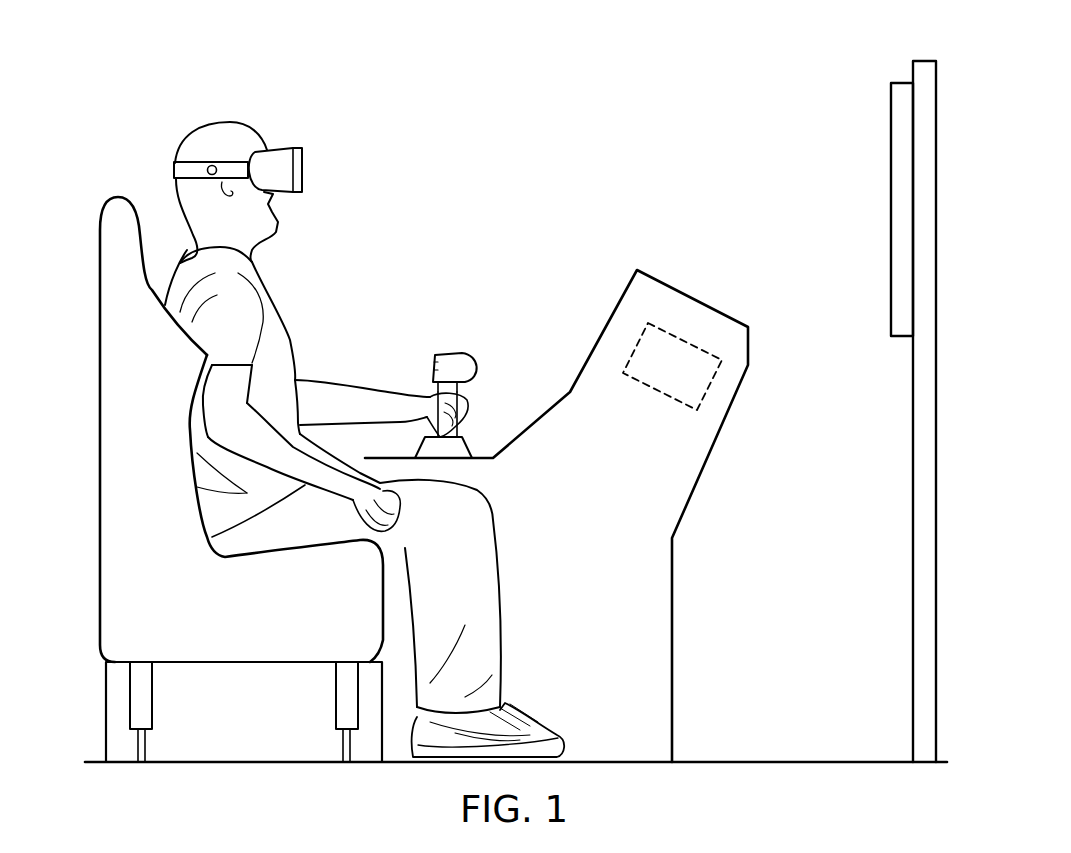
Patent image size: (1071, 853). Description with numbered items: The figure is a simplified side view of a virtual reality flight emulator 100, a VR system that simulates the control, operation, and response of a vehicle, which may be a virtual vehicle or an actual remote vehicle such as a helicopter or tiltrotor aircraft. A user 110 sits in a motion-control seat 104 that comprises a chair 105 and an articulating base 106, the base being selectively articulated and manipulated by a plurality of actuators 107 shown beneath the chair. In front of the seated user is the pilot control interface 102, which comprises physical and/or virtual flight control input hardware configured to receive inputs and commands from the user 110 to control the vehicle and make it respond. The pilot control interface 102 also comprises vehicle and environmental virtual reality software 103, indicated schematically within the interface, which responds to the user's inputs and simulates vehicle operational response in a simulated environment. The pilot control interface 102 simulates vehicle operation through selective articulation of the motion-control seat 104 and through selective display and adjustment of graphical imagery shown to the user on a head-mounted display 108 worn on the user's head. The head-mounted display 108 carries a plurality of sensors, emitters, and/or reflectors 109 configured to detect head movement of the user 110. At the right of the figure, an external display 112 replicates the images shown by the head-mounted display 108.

The virtual reality flight emulator 100 is at (702, 84).
The pilot control interface 102 is at (711, 452).
The vehicle and environmental virtual reality software 103 is at (688, 340).
The motion-control seat 104 is at (107, 198).
The chair 105 is at (100, 548).
The articulating base 106 is at (106, 716).
The actuators 107 is at (152, 700).
The head-mounted display 108 is at (302, 172).
The sensors, emitters, and/or reflectors 109 is at (211, 165).
The user 110 is at (282, 317).
The external display 112 is at (891, 143).